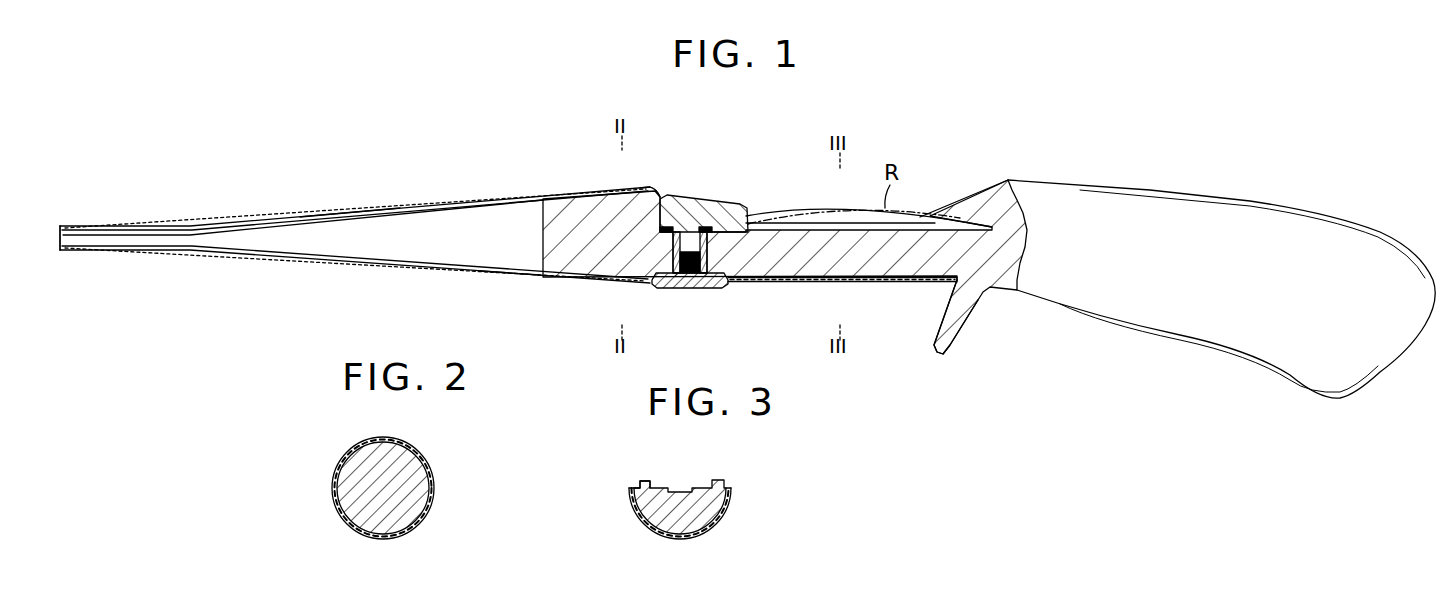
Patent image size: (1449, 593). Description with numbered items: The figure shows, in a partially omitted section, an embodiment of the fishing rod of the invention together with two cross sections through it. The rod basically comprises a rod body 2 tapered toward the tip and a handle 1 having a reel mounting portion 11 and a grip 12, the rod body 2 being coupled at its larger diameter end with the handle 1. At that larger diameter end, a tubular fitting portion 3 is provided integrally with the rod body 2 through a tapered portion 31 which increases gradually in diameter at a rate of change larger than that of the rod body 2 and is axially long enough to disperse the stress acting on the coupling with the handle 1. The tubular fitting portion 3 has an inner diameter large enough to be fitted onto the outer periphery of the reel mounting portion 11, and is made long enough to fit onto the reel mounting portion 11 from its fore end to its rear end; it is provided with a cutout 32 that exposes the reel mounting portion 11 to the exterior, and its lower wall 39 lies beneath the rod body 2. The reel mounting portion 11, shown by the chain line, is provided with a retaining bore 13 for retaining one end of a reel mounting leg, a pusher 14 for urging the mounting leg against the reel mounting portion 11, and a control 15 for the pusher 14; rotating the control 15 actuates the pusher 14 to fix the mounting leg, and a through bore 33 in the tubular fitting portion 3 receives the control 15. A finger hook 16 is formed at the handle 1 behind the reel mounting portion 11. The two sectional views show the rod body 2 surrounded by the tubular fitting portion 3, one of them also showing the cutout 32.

In FIG. 1, the handle 1 is at (1005, 176).
In FIG. 2, the handle 1 is at (425, 490).
In FIG. 3, the handle 1 is at (708, 520).
In FIG. 1, the rod body 2 is at (133, 226).
In FIG. 1, the tubular fitting portion 3 is at (560, 185).
In FIG. 2, the tubular fitting portion 3 is at (415, 520).
In FIG. 3, the tubular fitting portion 3 is at (670, 537).
In FIG. 1, the reel mounting portion 11 is at (830, 228).
In FIG. 1, the grip 12 is at (1212, 195).
In FIG. 1, the retaining bore 13 is at (980, 222).
In FIG. 1, the pusher 14 is at (705, 212).
In FIG. 1, the control 15 is at (700, 290).
In FIG. 1, the finger hook 16 is at (958, 345).
In FIG. 1, the tapered portion 31 is at (393, 207).
In FIG. 1, the cutout 32 is at (650, 185).
In FIG. 3, the cutout 32 is at (633, 485).
In FIG. 1, the through bore 33 is at (722, 290).
In FIG. 1, the sleeve lower wall 39 is at (505, 278).